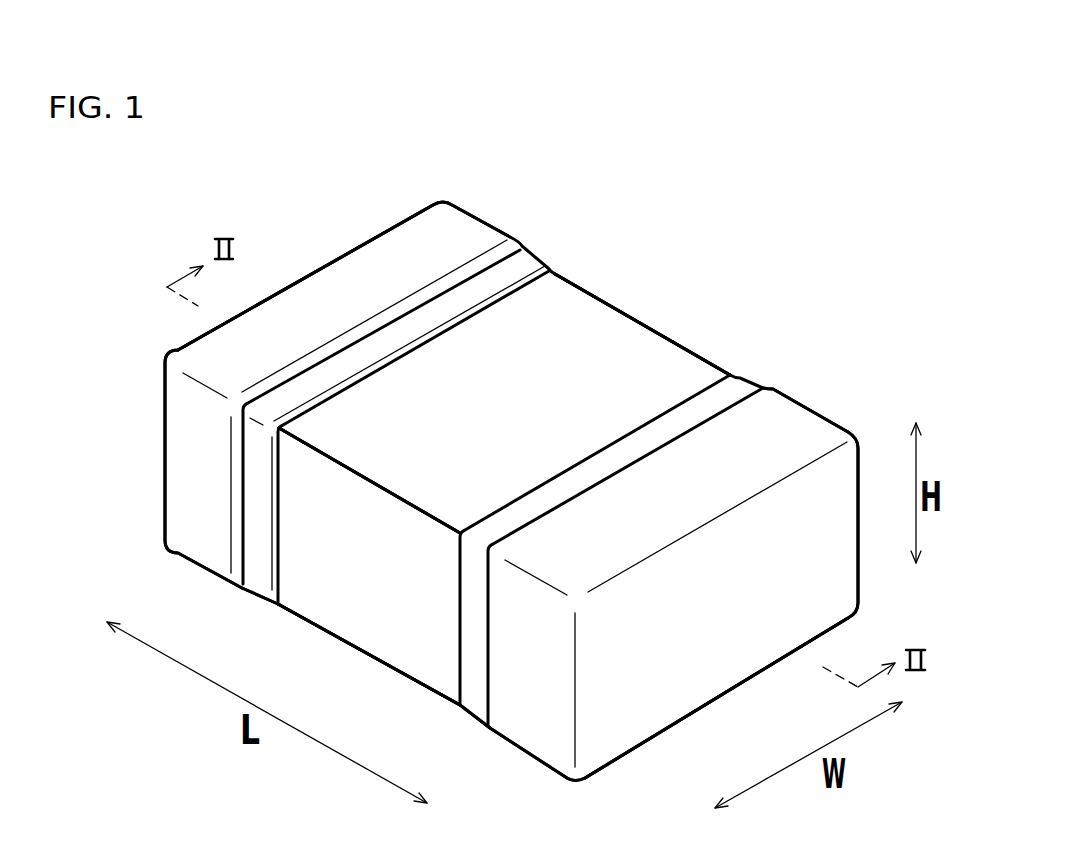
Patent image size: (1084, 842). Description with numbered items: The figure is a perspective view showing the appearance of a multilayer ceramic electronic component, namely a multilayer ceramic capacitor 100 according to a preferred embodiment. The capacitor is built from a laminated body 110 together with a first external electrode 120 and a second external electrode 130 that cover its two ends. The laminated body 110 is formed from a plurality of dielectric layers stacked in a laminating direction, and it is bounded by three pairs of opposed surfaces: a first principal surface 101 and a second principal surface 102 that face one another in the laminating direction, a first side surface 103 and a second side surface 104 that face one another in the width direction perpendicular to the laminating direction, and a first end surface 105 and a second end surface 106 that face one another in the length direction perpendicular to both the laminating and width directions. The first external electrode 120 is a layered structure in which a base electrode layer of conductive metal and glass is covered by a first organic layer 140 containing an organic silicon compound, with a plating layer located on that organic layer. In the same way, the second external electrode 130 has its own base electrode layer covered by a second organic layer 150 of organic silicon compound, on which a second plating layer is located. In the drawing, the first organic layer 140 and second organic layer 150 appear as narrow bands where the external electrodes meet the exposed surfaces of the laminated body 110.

The multilayer ceramic capacitor 100 is at (579, 209).
The first principal surface 101 is at (605, 333).
The second principal surface 102 is at (410, 675).
The first side surface 103 is at (667, 338).
The second side surface 104 is at (363, 630).
The first end surface 105 is at (338, 295).
The second end surface 106 is at (650, 692).
The laminated body 110 is at (300, 614).
The first external electrode 120 is at (178, 351).
The second external electrode 130 is at (813, 598).
The first organic layer 140 is at (257, 533).
The second organic layer 150 is at (478, 700).